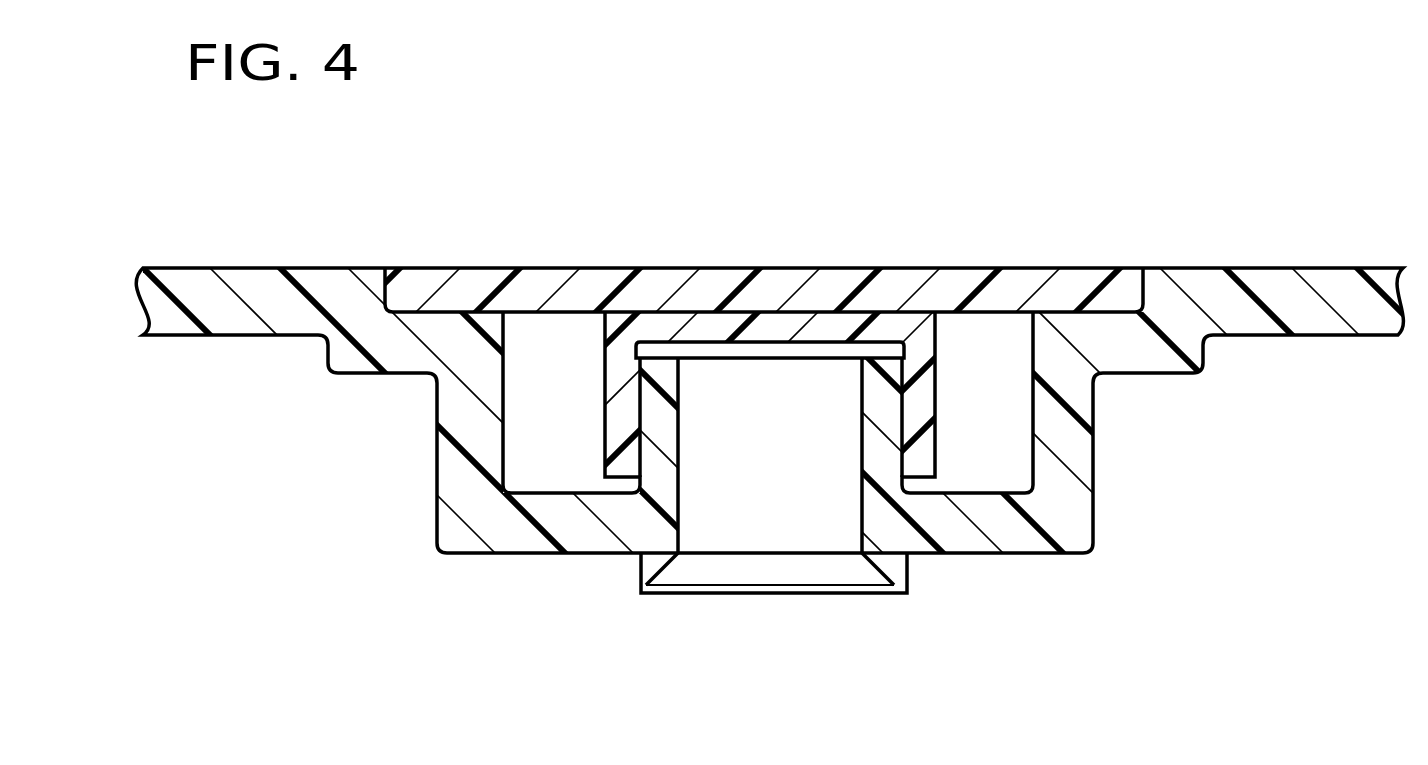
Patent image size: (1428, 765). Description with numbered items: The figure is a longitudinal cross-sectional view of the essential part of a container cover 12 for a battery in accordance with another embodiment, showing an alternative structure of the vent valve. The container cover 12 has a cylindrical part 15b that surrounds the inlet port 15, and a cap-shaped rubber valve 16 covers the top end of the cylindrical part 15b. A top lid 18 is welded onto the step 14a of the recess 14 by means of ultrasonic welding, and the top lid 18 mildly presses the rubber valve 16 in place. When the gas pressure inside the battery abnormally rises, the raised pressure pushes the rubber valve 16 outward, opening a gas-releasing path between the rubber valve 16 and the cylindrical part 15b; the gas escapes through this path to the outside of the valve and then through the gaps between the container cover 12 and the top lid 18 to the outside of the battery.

The container cover 12 is at (335, 292).
The recess 14 is at (548, 367).
The step 14a is at (441, 302).
The inlet port 15 is at (778, 475).
The cylindrical part 15b is at (877, 455).
The rubber valve 16 is at (738, 327).
The top lid 18 is at (955, 275).